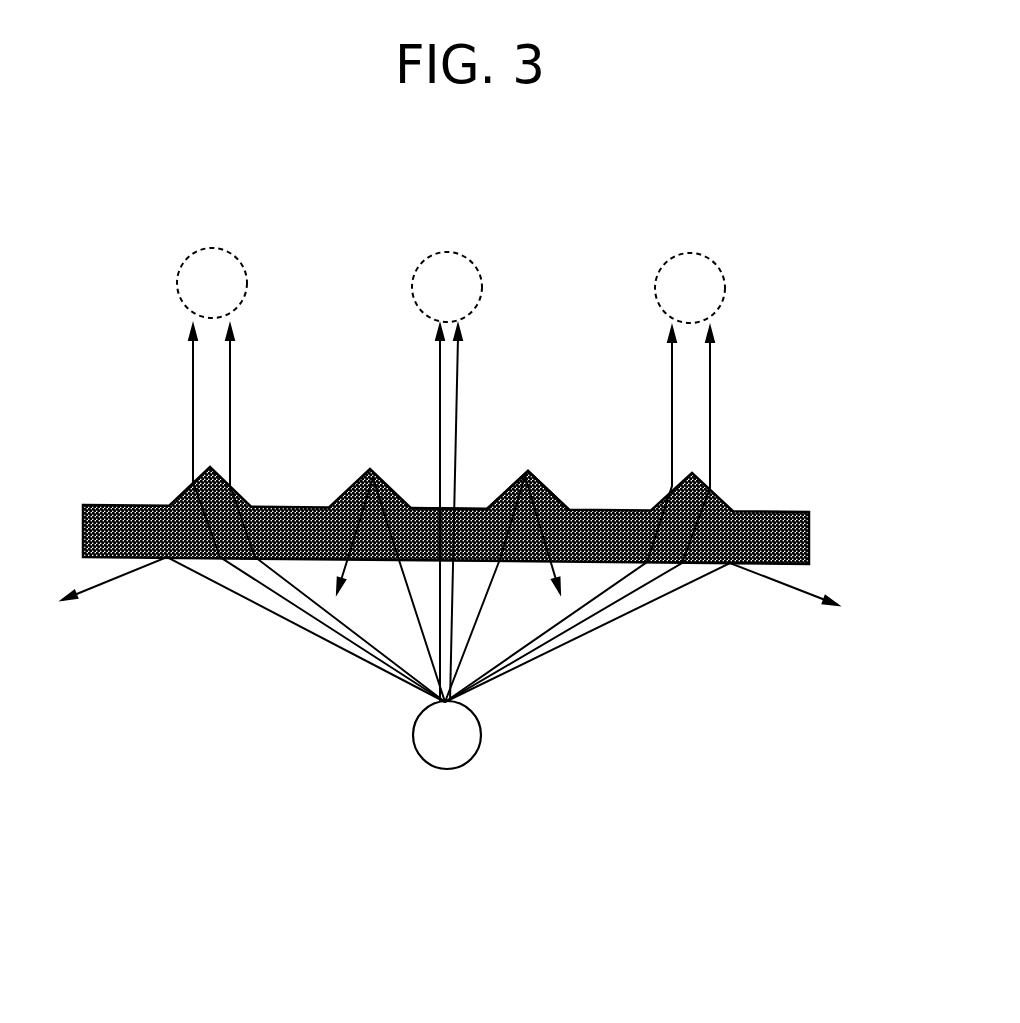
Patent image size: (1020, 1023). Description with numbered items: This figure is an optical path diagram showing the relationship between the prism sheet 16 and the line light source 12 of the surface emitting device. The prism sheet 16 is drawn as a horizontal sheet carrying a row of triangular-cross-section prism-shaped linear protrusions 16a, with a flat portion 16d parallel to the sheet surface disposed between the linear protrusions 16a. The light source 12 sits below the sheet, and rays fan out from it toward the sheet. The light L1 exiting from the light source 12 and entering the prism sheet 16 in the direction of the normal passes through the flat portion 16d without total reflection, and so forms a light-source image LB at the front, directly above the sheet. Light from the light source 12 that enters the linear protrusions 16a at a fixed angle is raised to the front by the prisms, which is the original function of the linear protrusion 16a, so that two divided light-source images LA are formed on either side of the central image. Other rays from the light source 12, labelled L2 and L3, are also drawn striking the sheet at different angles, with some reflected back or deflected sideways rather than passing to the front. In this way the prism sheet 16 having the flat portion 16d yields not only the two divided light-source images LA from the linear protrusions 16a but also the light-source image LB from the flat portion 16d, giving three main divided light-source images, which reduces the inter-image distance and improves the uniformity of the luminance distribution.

The prism sheet 16 is at (812, 538).
The linear protrusion 16a is at (533, 477).
The flat portion 16d is at (420, 507).
The light source 12 is at (468, 763).
The light L1 is at (435, 635).
The light ray L2 is at (300, 615).
The light ray L3 is at (200, 577).
The divided light-source image LA is at (212, 248).
The light-source image LB is at (446, 252).